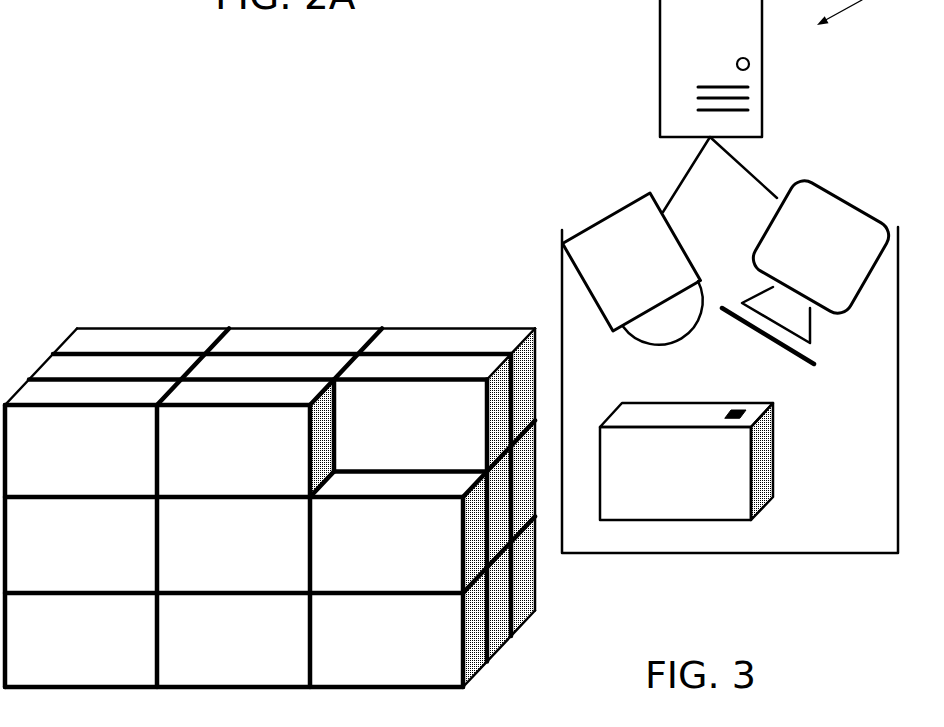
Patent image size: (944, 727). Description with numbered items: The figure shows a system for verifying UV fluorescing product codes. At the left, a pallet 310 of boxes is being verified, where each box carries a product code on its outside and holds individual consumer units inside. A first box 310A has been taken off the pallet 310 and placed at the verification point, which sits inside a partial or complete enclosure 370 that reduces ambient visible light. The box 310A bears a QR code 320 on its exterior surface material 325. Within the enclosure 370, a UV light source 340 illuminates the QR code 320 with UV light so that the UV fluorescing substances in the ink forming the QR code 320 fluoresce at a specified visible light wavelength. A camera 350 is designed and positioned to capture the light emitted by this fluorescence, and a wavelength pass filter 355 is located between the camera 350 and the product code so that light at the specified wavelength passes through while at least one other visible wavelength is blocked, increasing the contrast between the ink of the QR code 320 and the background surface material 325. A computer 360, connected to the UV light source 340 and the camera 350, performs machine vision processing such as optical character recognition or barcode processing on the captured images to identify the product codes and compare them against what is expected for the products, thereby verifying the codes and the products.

The pallet 310 is at (255, 310).
The first box 310A is at (708, 483).
The QR code 320 is at (746, 414).
The exterior surface material 325 is at (725, 442).
The UV light source 340 is at (599, 219).
The camera 350 is at (861, 198).
The wavelength pass filter 355 is at (810, 366).
The computer 360 is at (660, 56).
The enclosure 370 is at (792, 553).